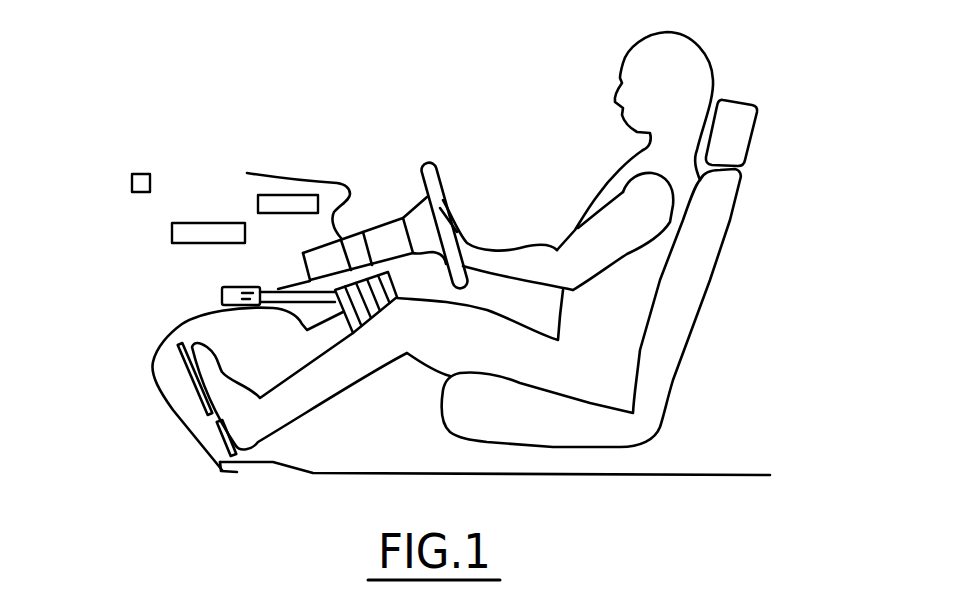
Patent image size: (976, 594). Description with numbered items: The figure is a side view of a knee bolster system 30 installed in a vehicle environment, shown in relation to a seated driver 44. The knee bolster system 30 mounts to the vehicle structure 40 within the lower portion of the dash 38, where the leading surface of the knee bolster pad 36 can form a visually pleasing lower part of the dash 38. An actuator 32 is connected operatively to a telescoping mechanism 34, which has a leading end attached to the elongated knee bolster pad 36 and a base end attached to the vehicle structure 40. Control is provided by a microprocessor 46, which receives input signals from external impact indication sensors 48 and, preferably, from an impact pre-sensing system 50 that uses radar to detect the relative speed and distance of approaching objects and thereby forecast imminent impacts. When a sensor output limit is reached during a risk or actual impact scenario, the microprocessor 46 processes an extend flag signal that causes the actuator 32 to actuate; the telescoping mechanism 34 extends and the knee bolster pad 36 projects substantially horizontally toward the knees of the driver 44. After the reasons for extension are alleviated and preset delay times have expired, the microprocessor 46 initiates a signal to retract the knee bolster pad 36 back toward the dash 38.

The knee bolster system 30 is at (161, 148).
The actuator 32 is at (222, 293).
The telescoping mechanism 34 is at (312, 302).
The knee bolster pad 36 is at (390, 274).
The dash 38 is at (350, 186).
The vehicle structure 40 is at (302, 258).
The driver 44 is at (687, 63).
The microprocessor 46 is at (180, 233).
The external impact indication sensors 48 is at (147, 177).
The impact pre-sensing system 50 is at (268, 203).